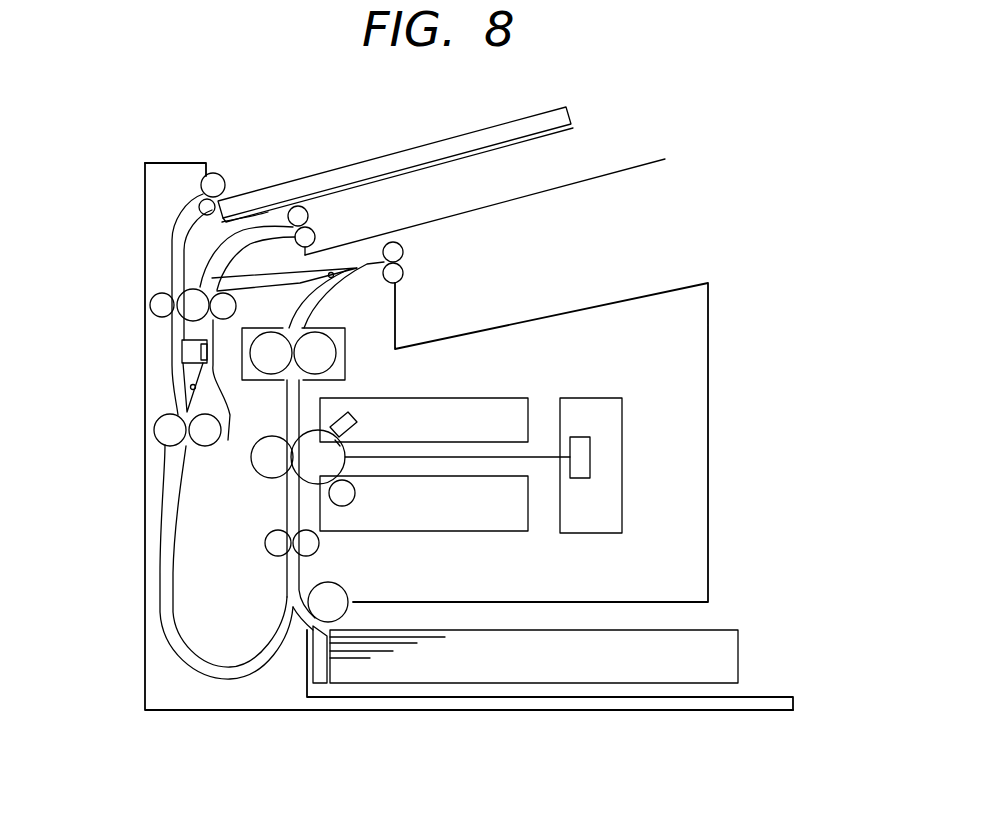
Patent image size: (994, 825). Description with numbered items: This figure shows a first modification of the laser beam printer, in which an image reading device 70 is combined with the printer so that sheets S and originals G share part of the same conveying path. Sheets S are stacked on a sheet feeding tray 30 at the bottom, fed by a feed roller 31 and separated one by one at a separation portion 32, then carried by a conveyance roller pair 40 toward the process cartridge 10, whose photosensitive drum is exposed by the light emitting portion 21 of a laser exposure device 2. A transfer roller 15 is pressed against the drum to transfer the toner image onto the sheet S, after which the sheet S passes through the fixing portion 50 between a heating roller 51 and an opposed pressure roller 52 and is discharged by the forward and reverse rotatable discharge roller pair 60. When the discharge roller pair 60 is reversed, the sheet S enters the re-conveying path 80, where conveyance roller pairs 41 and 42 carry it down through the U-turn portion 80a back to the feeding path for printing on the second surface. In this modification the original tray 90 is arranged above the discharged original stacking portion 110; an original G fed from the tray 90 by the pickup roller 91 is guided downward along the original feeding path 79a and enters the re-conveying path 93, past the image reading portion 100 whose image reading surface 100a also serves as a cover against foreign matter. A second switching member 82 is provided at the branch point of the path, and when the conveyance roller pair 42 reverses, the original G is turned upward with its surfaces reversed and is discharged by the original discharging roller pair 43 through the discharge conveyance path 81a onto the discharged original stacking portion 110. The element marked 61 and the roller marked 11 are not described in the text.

The laser exposure device 2 is at (623, 405).
The process cartridge 10 is at (345, 430).
The developing roller 11 is at (350, 495).
The transfer roller 15 is at (265, 478).
The light emitting portion 21 is at (590, 452).
The sheet feeding tray 30 is at (752, 695).
The feed roller 31 is at (343, 590).
The separation portion 32 is at (321, 673).
The conveyance roller pair 40 is at (318, 543).
The conveyance roller pair 41 is at (183, 300).
The conveyance roller pair 42 is at (168, 440).
The original discharging roller pair 43 is at (315, 233).
The fixing portion 50 is at (346, 370).
The heating roller 51 is at (335, 345).
The pressure roller 52 is at (265, 368).
The discharge roller pair 60 is at (403, 252).
The switching flapper 61 is at (348, 275).
The image reading device 70 is at (597, 305).
The original feeding path 79a is at (177, 252).
The re-conveying path 80 is at (243, 272).
The U-turn portion 80a is at (185, 653).
The discharge conveyance path 81a is at (276, 217).
The second switching member 82 is at (183, 395).
The original tray 90 is at (433, 160).
The pickup roller 91 is at (202, 180).
The re-conveying path 93 is at (228, 440).
The image reading portion 100 is at (183, 350).
The image reading surface 100a is at (200, 352).
The discharged original stacking portion 110 is at (606, 160).
The original G is at (502, 132).
The sheet S is at (712, 640).